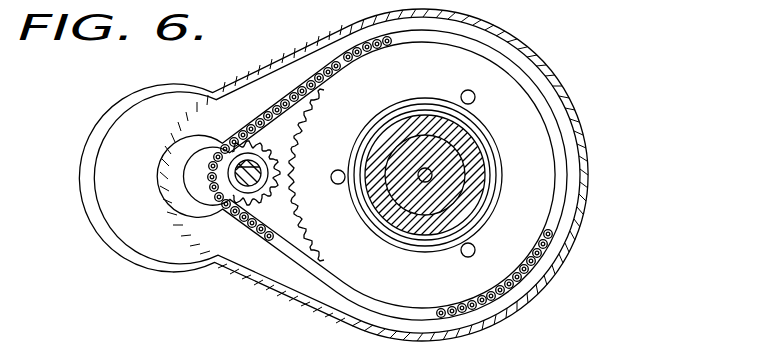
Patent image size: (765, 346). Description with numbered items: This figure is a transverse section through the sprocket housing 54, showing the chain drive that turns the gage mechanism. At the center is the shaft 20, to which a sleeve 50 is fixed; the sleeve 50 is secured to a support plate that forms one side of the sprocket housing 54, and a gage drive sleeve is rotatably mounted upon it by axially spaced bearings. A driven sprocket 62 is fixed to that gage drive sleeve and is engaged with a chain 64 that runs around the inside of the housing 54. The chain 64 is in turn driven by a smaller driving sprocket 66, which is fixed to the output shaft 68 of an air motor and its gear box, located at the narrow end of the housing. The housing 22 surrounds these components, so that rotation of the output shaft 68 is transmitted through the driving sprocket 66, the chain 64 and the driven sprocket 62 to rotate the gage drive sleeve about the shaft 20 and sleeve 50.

The shaft 20 is at (462, 158).
The housing 22 is at (736, 338).
The sleeve 50 is at (483, 177).
The sprocket housing 54 is at (588, 162).
The driven sprocket 62 is at (305, 245).
The chain 64 is at (253, 120).
The driving sprocket 66 is at (232, 141).
The output shaft 68 is at (238, 171).